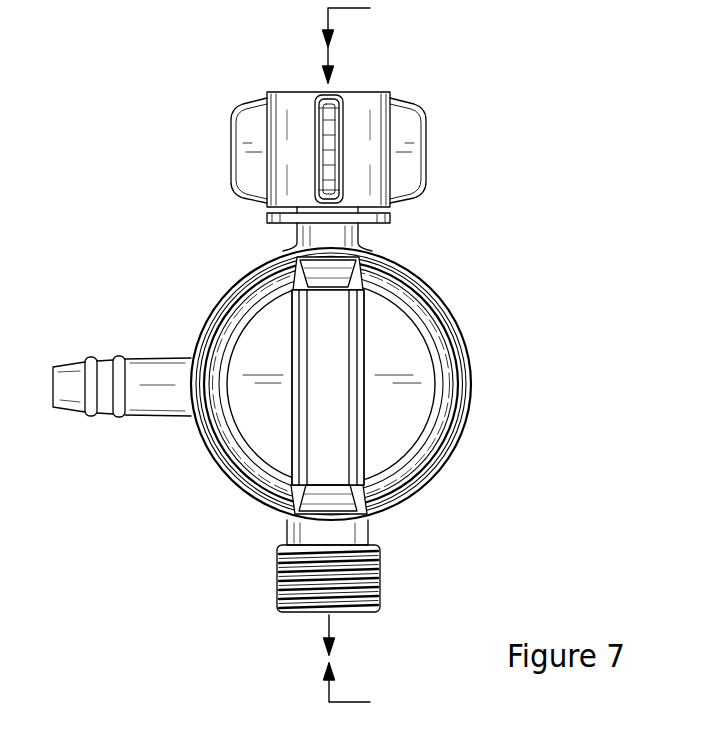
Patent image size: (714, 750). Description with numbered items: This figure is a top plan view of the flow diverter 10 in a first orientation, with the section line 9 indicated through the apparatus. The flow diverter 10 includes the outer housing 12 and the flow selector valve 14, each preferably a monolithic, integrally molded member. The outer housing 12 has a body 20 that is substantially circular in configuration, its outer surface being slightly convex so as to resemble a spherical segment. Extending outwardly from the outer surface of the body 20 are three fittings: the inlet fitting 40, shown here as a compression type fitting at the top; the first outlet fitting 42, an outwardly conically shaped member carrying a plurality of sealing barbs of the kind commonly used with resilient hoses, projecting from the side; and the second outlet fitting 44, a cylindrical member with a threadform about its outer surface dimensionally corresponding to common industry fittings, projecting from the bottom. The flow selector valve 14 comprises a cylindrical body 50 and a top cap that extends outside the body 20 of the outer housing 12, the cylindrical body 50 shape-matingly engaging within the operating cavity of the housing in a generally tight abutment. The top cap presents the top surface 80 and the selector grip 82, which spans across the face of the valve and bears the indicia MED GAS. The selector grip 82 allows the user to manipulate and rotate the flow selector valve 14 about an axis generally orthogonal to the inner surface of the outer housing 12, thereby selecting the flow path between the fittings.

The section line 9- 9 is at (354, 358).
The flow diverter 10 is at (131, 286).
The outer housing 12 is at (211, 281).
The flow selector valve 14 is at (229, 462).
The body 20 is at (176, 330).
The inlet fitting 40 is at (196, 147).
The first outlet fitting 42 is at (100, 342).
The second outlet fitting 44 is at (400, 580).
The cylindrical body 50 is at (427, 460).
The top surface 80 is at (430, 346).
The selector grip 82 is at (367, 322).